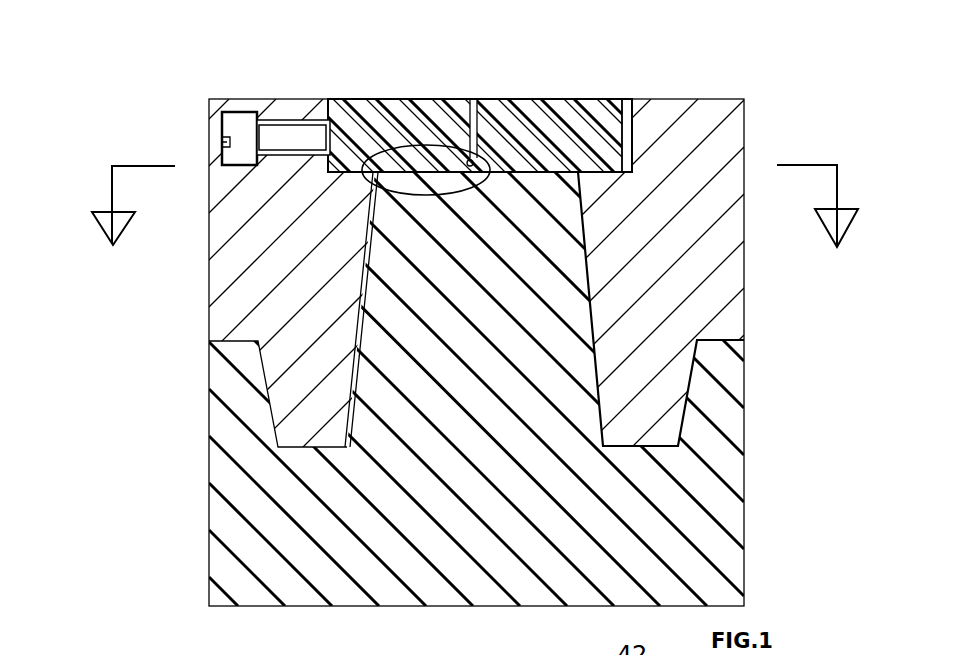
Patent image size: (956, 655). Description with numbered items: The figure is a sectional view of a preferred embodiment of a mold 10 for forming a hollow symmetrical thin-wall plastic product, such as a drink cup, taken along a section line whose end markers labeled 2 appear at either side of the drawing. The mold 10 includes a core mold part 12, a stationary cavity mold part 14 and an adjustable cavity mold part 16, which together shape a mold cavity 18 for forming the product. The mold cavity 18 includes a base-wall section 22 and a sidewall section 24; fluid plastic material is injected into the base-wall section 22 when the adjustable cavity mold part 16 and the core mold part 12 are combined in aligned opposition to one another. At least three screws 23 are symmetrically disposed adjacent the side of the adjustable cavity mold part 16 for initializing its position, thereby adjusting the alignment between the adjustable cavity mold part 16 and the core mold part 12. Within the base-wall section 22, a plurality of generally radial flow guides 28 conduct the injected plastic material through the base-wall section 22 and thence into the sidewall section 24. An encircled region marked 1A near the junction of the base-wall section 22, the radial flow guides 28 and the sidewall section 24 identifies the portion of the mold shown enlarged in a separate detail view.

The mold 10 is at (748, 95).
The core mold part 12 is at (209, 437).
The stationary cavity mold part 14 is at (209, 303).
The adjustable cavity mold part 16 is at (505, 98).
The mold cavity 18 is at (585, 272).
The base-wall section 22 is at (547, 170).
The screws 23 is at (245, 140).
The sidewall section 24 is at (370, 246).
The radial flow guides 28 is at (467, 158).
The detail region 1A is at (427, 142).
The section line 2- 2 is at (471, 206).